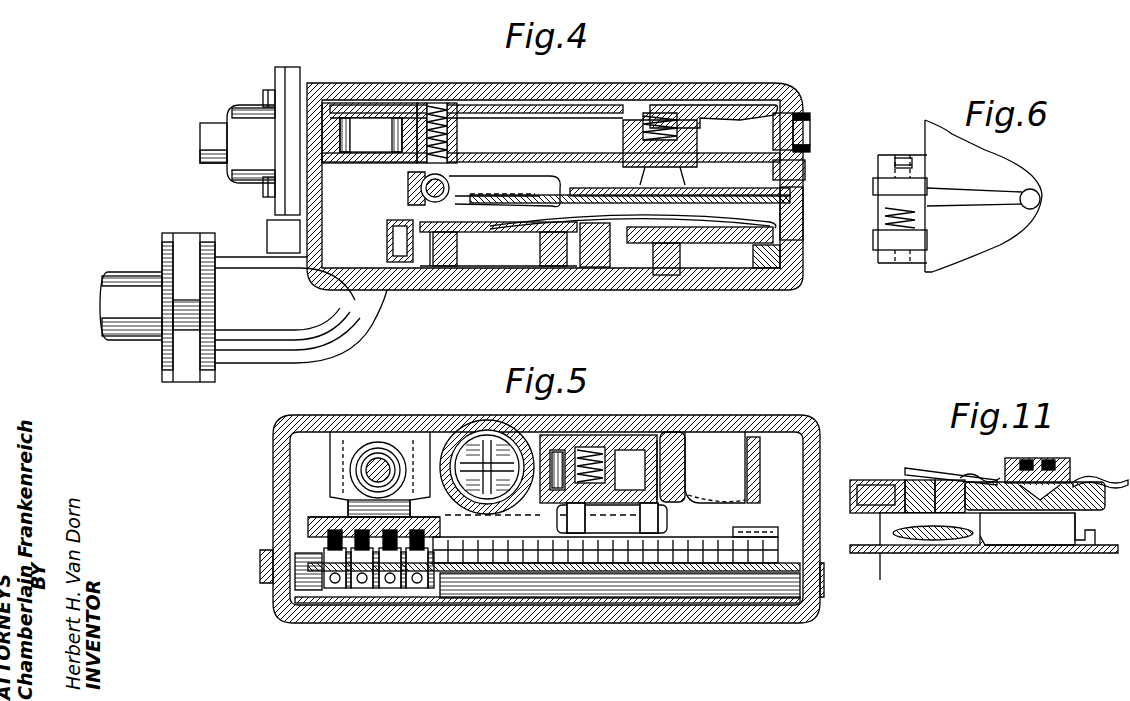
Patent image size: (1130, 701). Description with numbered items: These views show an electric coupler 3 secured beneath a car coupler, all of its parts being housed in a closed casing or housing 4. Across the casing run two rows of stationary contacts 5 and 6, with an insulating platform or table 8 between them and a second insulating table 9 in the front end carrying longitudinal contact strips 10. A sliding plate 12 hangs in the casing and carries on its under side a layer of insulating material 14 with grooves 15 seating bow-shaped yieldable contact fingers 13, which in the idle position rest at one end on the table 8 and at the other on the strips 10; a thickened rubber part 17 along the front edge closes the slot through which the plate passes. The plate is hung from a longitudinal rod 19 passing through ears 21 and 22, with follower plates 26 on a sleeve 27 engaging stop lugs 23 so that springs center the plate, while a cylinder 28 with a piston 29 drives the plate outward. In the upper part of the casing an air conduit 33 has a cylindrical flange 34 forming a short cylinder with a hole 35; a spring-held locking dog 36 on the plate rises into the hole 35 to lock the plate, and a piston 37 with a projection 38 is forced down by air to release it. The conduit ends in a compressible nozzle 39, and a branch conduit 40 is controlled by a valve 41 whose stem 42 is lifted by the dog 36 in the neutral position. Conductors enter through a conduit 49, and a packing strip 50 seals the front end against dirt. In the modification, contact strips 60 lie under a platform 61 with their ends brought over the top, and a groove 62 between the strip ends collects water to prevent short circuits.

In FIG. 5, the electric coupler 3 is at (272, 415).
In FIG. 4, the casing or housing 4 is at (760, 95).
In FIG. 5, the casing or housing 4 is at (785, 425).
In FIG. 4, the stationary contacts 5 is at (385, 228).
In FIG. 4, the stationary contacts 6 is at (612, 265).
In FIG. 5, the stationary contacts 6 is at (385, 588).
In FIG. 4, the platform or table 8 is at (482, 215).
In FIG. 5, the platform or table 8 is at (665, 575).
In FIG. 4, the table or platform 9 is at (690, 270).
In FIG. 4, the contact strips 10 is at (806, 170).
In FIG. 4, the sliding plate 12 is at (598, 188).
In FIG. 6, the sliding plate 12 is at (988, 230).
In FIG. 5, the sliding plate 12 is at (305, 520).
In FIG. 4, the contact fingers 13 is at (498, 244).
In FIG. 5, the contact fingers 13 is at (305, 545).
In FIG. 11, the contact fingers 13 is at (950, 478).
In FIG. 4, the layer of insulating material 14 is at (728, 198).
In FIG. 5, the layer of insulating material 14 is at (310, 533).
In FIG. 4, the grooves 15 is at (470, 215).
In FIG. 5, the grooves 15 is at (335, 515).
In FIG. 4, the thickened part 17 is at (806, 222).
In FIG. 11, the thickened part 17 is at (1030, 462).
In FIG. 5, the rod 19 is at (383, 460).
In FIG. 5, the ears 21 is at (320, 515).
In FIG. 5, the ears 22 is at (755, 523).
In FIG. 5, the stop lugs 23 is at (672, 432).
In FIG. 5, the follower plates 26 is at (345, 430).
In FIG. 5, the sleeve 27 is at (415, 458).
In FIG. 5, the cylinder 28 is at (490, 432).
In FIG. 5, the piston 29 is at (518, 435).
In FIG. 4, the air conduit 33 is at (555, 125).
In FIG. 5, the air conduit 33 is at (605, 530).
In FIG. 4, the cylindrical flange 34 is at (700, 122).
In FIG. 4, the hole 35 is at (650, 165).
In FIG. 4, the locking dog or finger 36 is at (500, 175).
In FIG. 6, the locking dog or finger 36 is at (968, 190).
In FIG. 4, the piston 37 is at (625, 126).
In FIG. 4, the projection 38 is at (672, 178).
In FIG. 4, the compressible nozzle or outlet 39 is at (812, 125).
In FIG. 4, the branch conduit 40 is at (362, 125).
In FIG. 5, the branch conduit 40 is at (660, 470).
In FIG. 4, the valve 41 is at (440, 110).
In FIG. 5, the valve 41 is at (610, 450).
In FIG. 4, the valve stem 42 is at (405, 178).
In FIG. 5, the valve stem 42 is at (612, 518).
In FIG. 4, the conduit 49 is at (137, 345).
In FIG. 4, the packing strip 50 is at (808, 280).
In FIG. 11, the contact strips 60 is at (872, 480).
In FIG. 11, the platform 61 is at (872, 530).
In FIG. 11, the groove 62 is at (1070, 478).